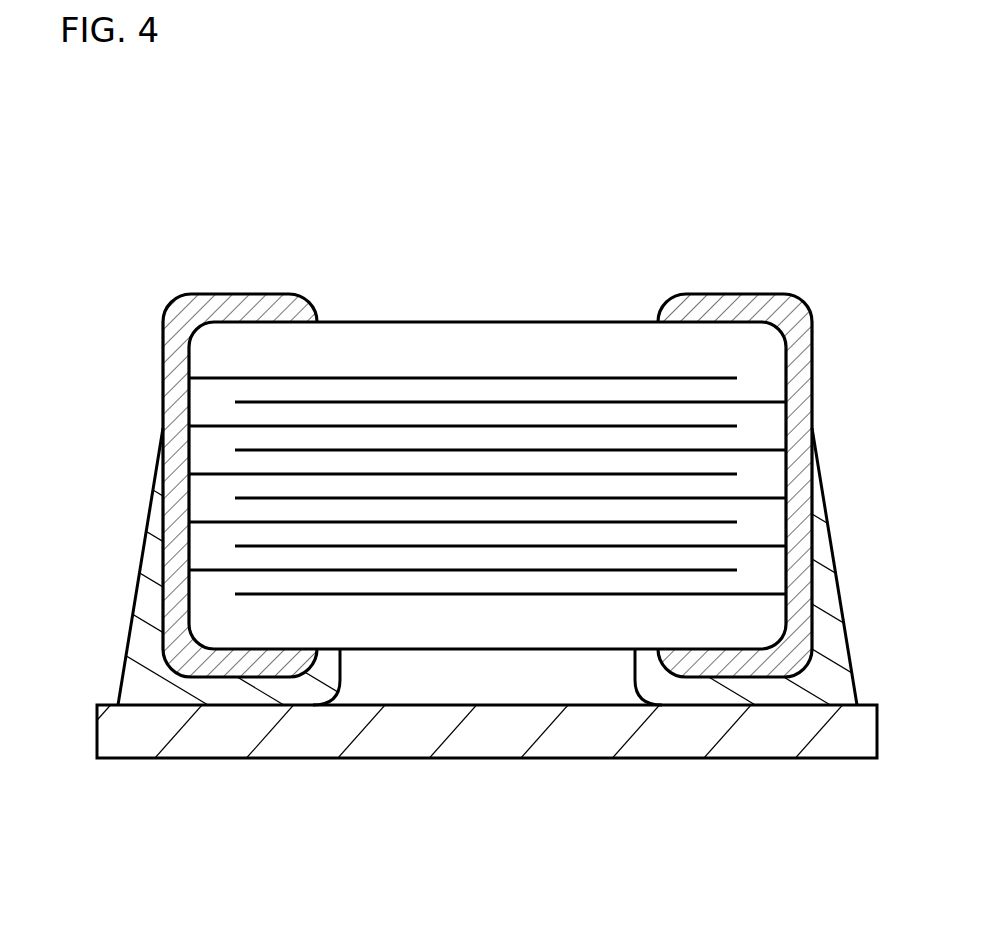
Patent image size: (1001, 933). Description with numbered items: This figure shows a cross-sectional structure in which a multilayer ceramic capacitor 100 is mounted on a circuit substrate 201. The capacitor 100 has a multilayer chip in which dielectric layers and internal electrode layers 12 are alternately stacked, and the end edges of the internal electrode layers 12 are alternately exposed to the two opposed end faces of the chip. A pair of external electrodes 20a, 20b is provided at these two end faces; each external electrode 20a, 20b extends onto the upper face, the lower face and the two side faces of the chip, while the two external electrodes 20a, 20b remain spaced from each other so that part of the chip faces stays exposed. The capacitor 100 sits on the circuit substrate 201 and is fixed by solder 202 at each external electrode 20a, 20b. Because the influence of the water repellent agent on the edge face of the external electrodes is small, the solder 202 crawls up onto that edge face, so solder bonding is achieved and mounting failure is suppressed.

The multilayer ceramic capacitor 100 is at (482, 399).
The internal electrode layers 12 is at (443, 402).
The external electrode 20a is at (192, 296).
The external electrode 20b is at (775, 293).
The circuit substrate 201 is at (325, 740).
The solder 202 is at (140, 635).